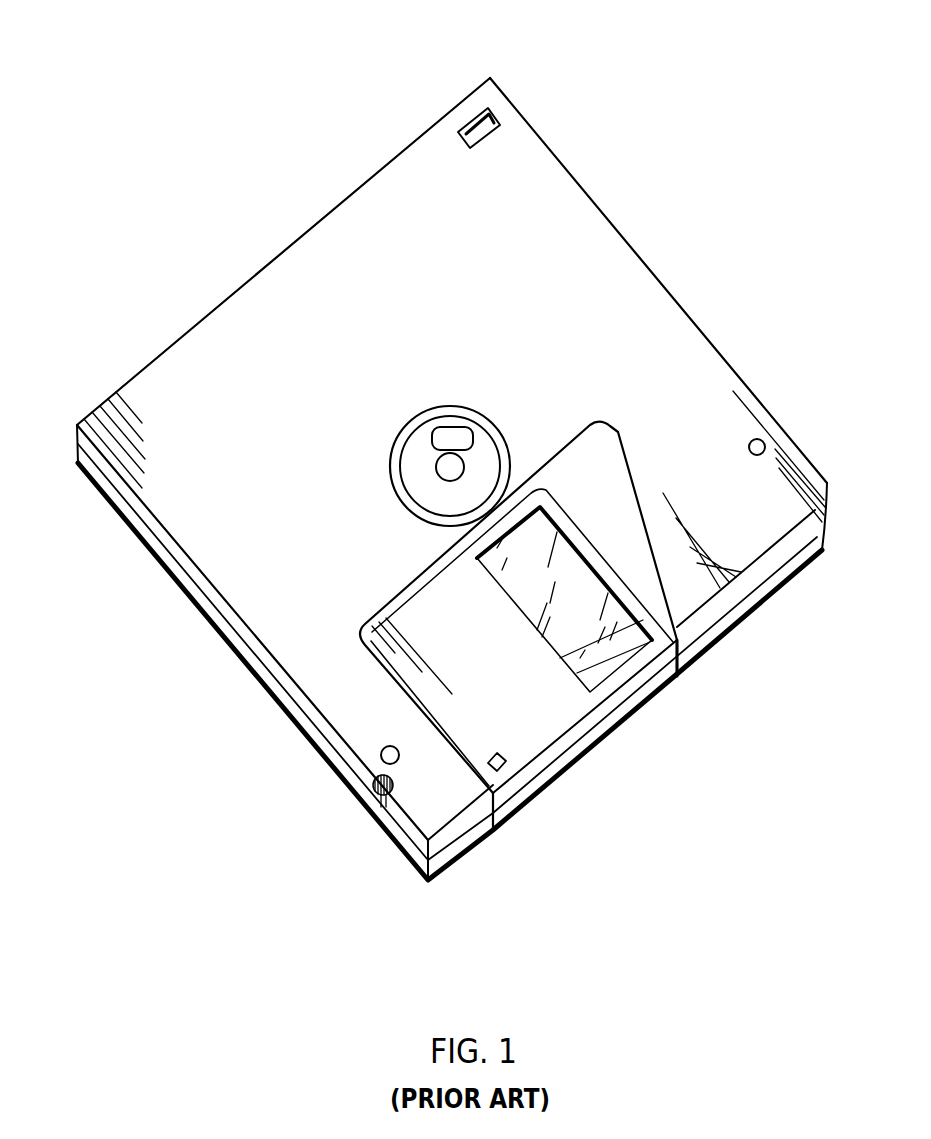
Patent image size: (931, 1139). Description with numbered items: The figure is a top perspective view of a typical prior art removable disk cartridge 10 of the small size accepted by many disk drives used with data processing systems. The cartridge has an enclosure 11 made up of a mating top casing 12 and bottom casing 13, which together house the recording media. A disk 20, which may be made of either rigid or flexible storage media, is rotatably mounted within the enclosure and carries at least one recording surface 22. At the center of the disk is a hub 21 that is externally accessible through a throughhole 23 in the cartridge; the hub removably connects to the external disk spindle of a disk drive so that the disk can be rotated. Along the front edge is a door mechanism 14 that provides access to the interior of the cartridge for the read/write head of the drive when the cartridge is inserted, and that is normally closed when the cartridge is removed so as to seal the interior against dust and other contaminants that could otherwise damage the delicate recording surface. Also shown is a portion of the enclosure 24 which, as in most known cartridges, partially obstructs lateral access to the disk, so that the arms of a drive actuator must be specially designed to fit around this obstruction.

The removable disk cartridge 10 is at (728, 329).
The enclosure 11 is at (148, 364).
The top casing 12 is at (78, 438).
The bottom casing 13 is at (78, 461).
The door mechanism 14 is at (560, 762).
The disk 20 is at (535, 605).
The hub 21 is at (489, 449).
The recording surface 22 is at (662, 690).
The throughhole 23 is at (463, 410).
The portion of the enclosure 24 is at (672, 657).